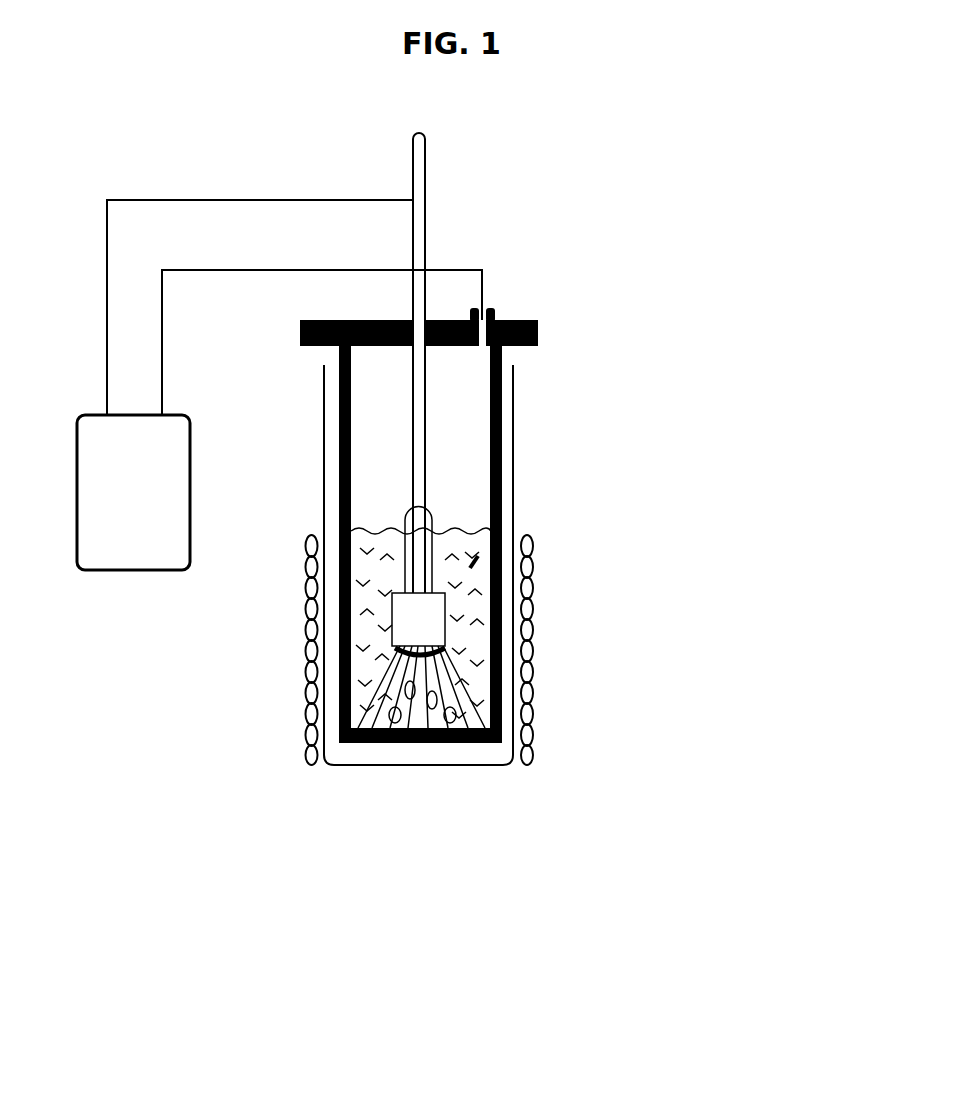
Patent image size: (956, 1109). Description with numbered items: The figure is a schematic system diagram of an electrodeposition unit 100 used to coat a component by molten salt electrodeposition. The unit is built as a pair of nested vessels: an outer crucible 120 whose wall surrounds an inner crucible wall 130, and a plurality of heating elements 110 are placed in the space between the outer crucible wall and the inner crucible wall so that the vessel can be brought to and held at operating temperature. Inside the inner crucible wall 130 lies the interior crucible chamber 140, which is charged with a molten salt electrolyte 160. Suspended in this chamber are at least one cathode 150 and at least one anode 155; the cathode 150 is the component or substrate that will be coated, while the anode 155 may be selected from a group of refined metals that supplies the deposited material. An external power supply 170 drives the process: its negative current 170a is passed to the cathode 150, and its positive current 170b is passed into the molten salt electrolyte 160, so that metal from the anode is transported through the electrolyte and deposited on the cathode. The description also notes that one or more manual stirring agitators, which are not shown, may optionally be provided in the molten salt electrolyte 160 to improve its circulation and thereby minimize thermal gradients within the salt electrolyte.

The electrodeposition unit 100 is at (575, 312).
The heating elements 110 is at (300, 746).
The outer crucible 120 is at (316, 413).
The inner crucible wall 130 is at (472, 372).
The interior crucible chamber 140 is at (469, 446).
The cathode 150 is at (457, 740).
The anode 155 is at (359, 754).
The molten salt electrolyte 160 is at (374, 530).
The external power supply 170 is at (287, 380).
The negative current 170a is at (251, 324).
The positive current 170b is at (320, 350).